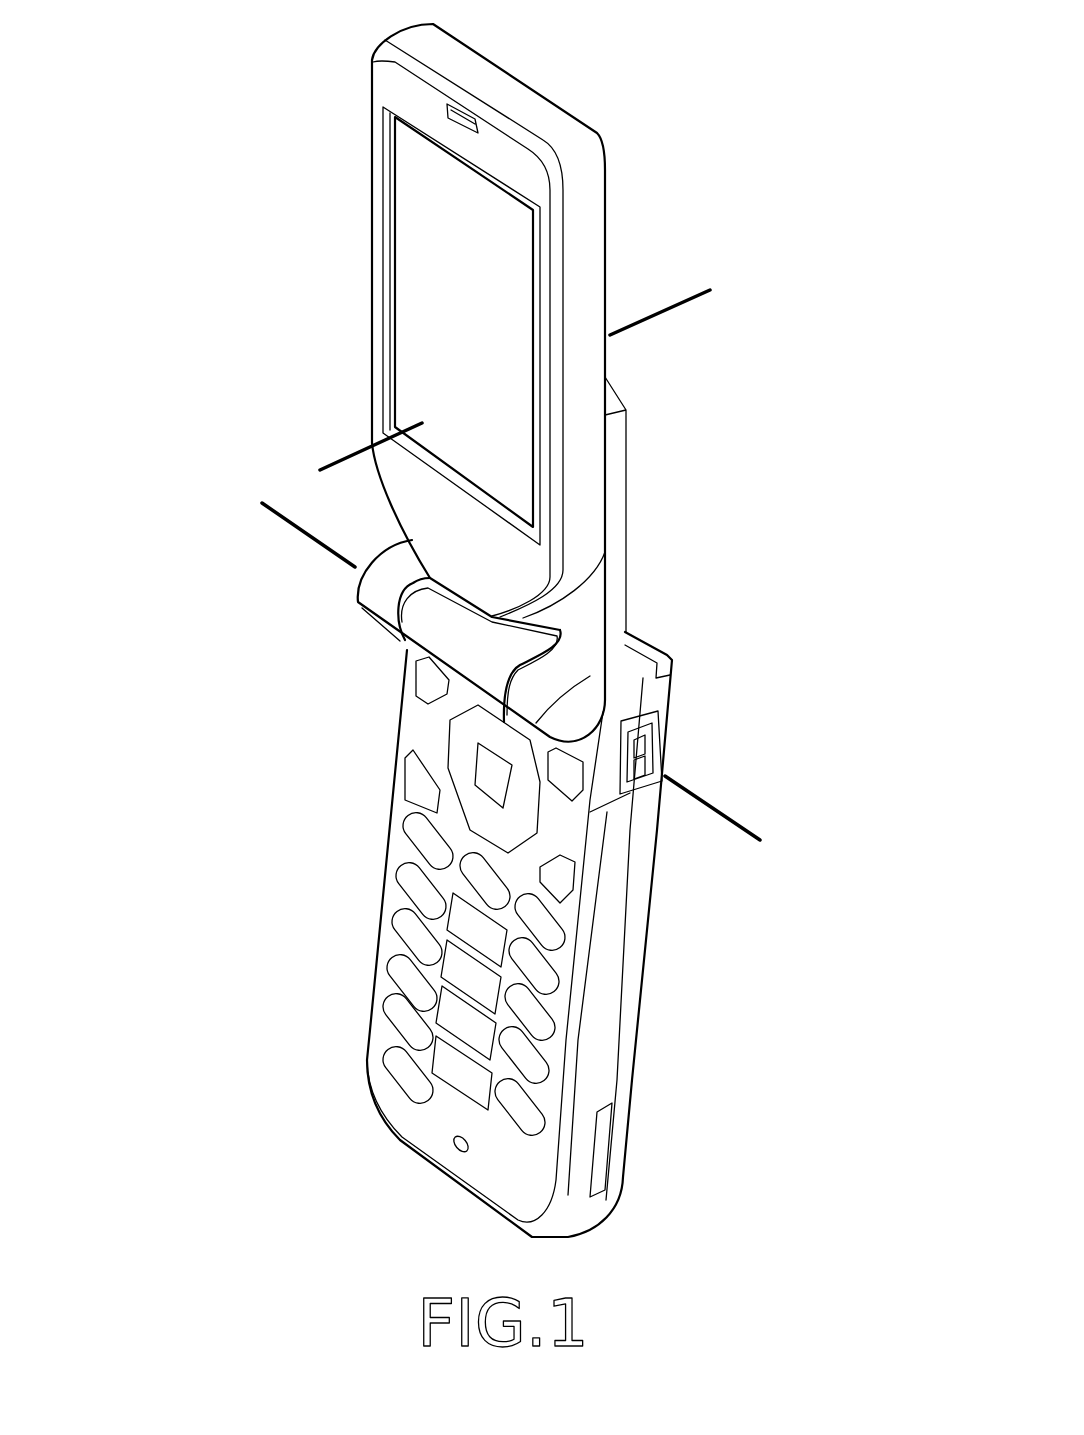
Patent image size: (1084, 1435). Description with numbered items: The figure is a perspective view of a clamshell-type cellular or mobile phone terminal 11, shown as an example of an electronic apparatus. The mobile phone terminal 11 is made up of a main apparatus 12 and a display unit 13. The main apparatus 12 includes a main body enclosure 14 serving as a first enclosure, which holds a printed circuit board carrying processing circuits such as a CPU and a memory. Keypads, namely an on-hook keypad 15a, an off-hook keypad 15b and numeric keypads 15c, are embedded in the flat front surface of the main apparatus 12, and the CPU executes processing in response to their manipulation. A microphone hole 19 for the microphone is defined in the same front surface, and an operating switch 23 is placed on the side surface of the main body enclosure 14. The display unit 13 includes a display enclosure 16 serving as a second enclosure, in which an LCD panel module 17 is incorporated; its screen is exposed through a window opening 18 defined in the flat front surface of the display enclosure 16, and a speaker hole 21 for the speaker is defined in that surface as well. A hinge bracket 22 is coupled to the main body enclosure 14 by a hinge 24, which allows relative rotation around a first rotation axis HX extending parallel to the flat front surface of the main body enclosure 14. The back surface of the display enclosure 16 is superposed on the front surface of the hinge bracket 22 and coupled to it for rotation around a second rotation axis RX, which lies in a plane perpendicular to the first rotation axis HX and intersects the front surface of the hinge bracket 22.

The mobile phone terminal 11 is at (647, 86).
The main apparatus 12 is at (381, 755).
The display unit 13 is at (356, 119).
The main body enclosure 14 is at (617, 1042).
The on-hook keypad 15a is at (413, 833).
The off-hook keypad 15b is at (553, 930).
The numeric keypads 15c is at (410, 928).
The display enclosure 16 is at (597, 238).
The LCD panel module 17 is at (410, 318).
The window opening 18 is at (390, 238).
The microphone hole 19 is at (452, 1147).
The speaker hole 21 is at (447, 108).
The hinge bracket 22 is at (617, 563).
The operating switch 23 is at (645, 758).
The hinge 24 is at (405, 666).
The second rotation axis RX is at (532, 380).
The first rotation axis HX is at (496, 671).